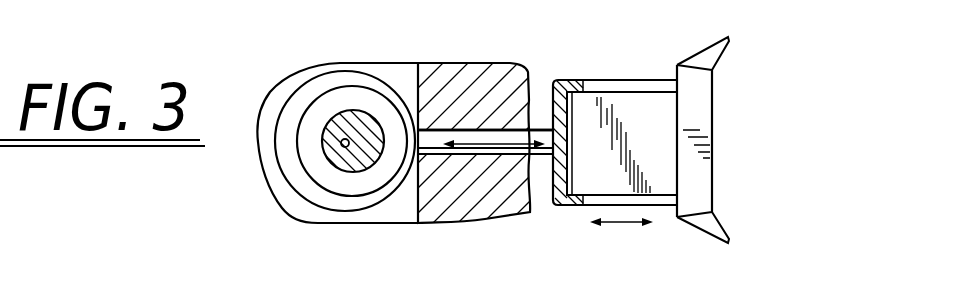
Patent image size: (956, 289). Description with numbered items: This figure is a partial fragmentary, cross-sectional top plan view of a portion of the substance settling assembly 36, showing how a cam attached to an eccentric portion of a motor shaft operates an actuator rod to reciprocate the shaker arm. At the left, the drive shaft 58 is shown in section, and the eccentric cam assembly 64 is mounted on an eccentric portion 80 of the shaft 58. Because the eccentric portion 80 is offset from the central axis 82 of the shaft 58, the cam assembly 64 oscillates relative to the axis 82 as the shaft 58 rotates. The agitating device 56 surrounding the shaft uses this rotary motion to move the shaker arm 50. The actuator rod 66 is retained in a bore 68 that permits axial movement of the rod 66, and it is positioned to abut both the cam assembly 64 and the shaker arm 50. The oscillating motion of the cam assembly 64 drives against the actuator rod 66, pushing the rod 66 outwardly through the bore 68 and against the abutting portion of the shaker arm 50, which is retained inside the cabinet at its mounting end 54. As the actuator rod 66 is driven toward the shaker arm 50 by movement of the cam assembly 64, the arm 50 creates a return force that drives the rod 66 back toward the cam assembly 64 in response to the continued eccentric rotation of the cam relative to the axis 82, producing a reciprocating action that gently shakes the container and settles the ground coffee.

The substance settling assembly 36 is at (306, 52).
The shaker arm 50 is at (574, 207).
The mounting end 54 is at (703, 237).
The agitating device 56 is at (462, 206).
The drive shaft 58 is at (354, 112).
The eccentric cam assembly 64 is at (303, 113).
The actuator rod 66 is at (502, 130).
The bore 68 is at (487, 130).
The eccentric portion 80 is at (330, 163).
The central axis 82 is at (345, 148).